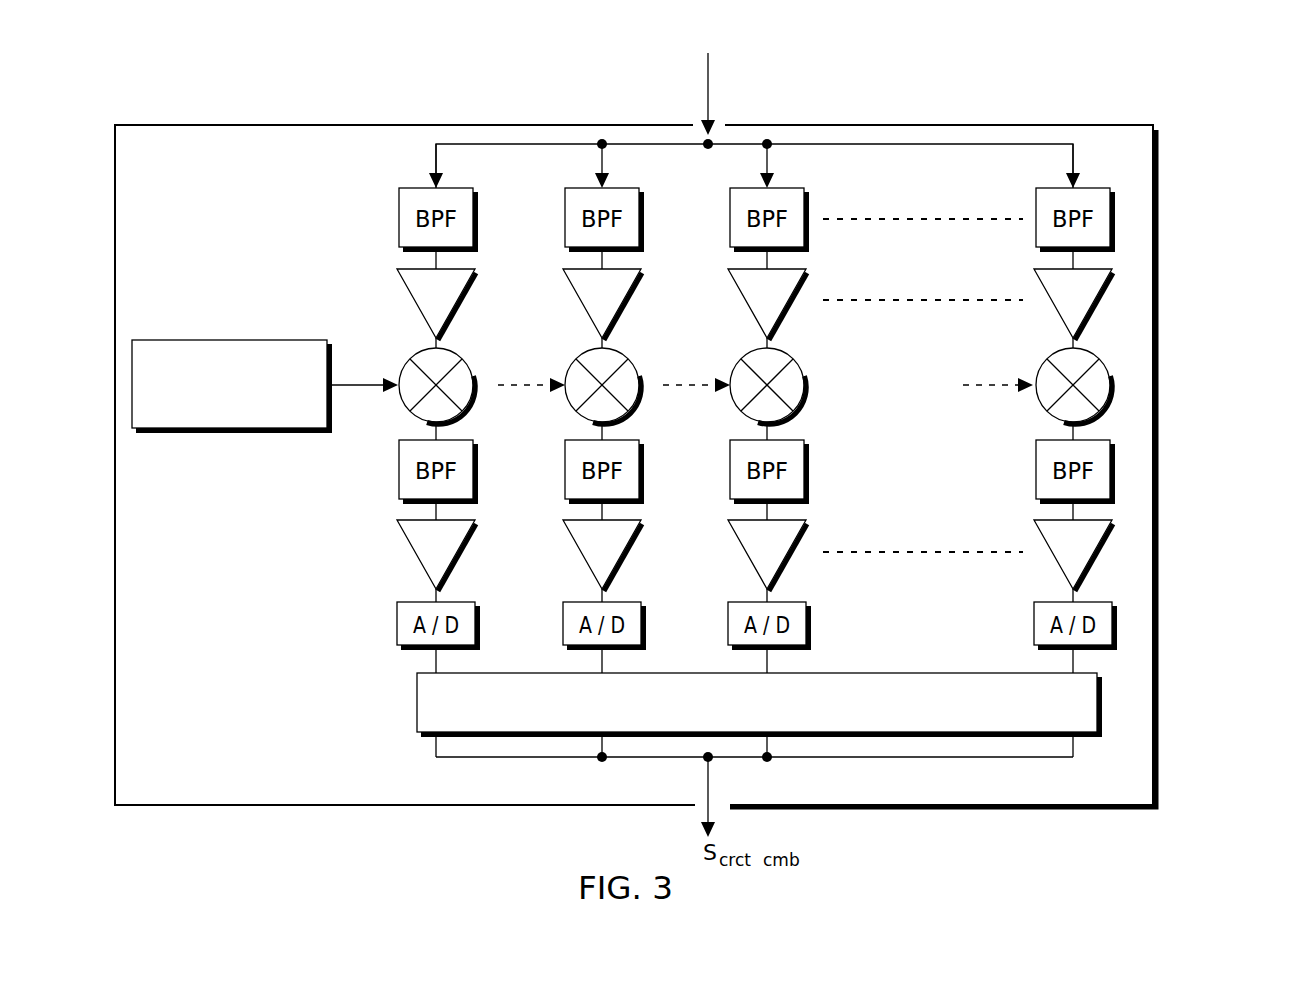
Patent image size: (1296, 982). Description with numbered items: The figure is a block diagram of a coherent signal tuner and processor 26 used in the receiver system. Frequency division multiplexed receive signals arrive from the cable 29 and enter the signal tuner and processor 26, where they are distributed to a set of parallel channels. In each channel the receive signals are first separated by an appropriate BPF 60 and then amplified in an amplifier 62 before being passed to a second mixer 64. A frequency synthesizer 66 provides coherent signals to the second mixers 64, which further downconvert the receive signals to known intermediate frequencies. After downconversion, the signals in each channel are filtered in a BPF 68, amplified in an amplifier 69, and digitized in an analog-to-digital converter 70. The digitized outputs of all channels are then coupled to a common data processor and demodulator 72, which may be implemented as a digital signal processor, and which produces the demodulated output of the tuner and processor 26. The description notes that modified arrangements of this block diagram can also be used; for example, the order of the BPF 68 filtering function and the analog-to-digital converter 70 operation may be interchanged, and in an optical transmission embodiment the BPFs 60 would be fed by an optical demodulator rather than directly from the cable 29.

The signal tuner and processor 26 is at (1170, 194).
The cable 29 is at (724, 70).
The BPF 60 is at (399, 209).
The amplifier 62 is at (404, 284).
The second mixer 64 is at (418, 351).
The frequency synthesizer 66 is at (240, 434).
The BPF 68 is at (398, 478).
The amplifier 69 is at (402, 540).
The analog-to-digital converter 70 is at (397, 617).
The data processor and demodulator 72 is at (417, 689).